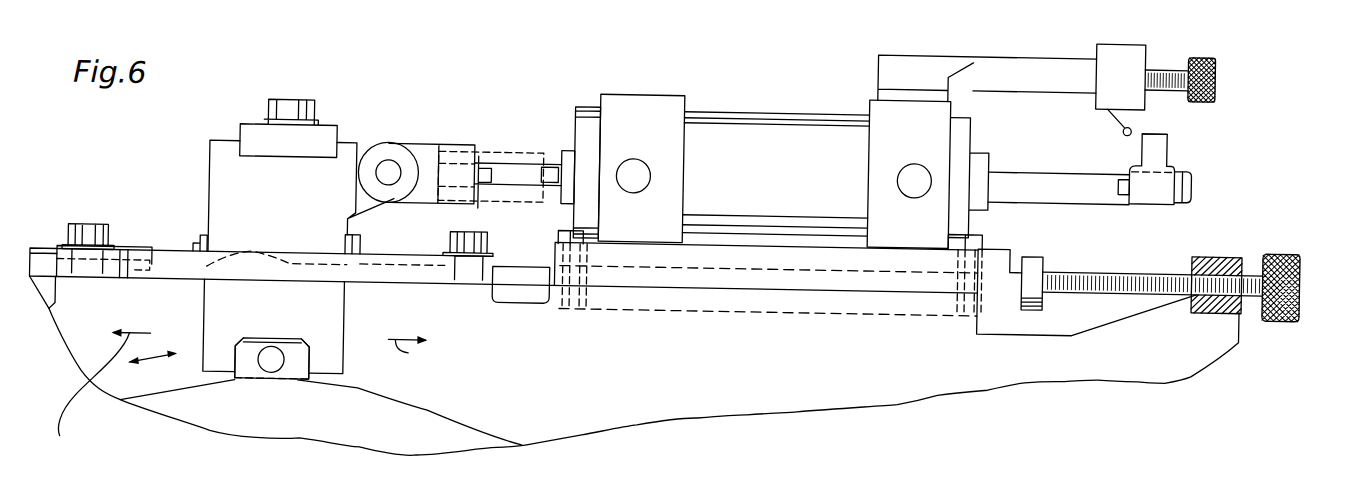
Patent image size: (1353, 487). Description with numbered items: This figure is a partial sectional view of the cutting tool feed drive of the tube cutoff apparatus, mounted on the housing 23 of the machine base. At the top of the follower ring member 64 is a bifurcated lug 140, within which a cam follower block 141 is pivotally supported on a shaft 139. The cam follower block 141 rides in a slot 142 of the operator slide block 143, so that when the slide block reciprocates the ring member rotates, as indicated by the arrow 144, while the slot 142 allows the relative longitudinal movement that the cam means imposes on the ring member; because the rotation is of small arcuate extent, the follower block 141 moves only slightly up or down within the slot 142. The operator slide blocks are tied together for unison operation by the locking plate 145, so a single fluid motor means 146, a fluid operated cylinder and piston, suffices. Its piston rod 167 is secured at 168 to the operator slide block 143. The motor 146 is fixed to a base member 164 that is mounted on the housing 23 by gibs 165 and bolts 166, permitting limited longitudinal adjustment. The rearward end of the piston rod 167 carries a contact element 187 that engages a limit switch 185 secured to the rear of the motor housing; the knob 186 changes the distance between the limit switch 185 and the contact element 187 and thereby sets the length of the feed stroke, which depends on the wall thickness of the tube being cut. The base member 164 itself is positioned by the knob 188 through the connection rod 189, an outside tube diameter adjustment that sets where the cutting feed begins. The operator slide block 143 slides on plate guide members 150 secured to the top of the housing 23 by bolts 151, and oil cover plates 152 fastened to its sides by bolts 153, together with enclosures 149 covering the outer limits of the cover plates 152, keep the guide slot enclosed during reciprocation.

The housing 23 is at (150, 266).
The follower ring member 64 is at (503, 427).
The shaft 139 is at (274, 342).
The bifurcated lug 140 is at (302, 378).
The cam follower block 141 is at (313, 340).
The slot 142 is at (243, 347).
The operator slide block 143 is at (214, 150).
The arrow 144 is at (155, 360).
The locking plate 145 is at (247, 132).
The fluid motor means 146 is at (765, 117).
The enclosure 149 is at (42, 247).
The plate guide member 150 is at (126, 247).
The bolt 151 is at (84, 222).
The oil cover plate 152 is at (247, 249).
The bolt 153 is at (192, 235).
The base member 164 is at (923, 267).
The gib 165 is at (757, 228).
The bolt 166 is at (592, 226).
The piston rod 167 is at (505, 154).
The connection 168 is at (389, 165).
The limit switch 185 is at (1124, 37).
The knob 186 is at (1197, 39).
The piston rod contact element 187 is at (1158, 128).
The knob 188 is at (1300, 216).
The connection rod 189 is at (1067, 258).